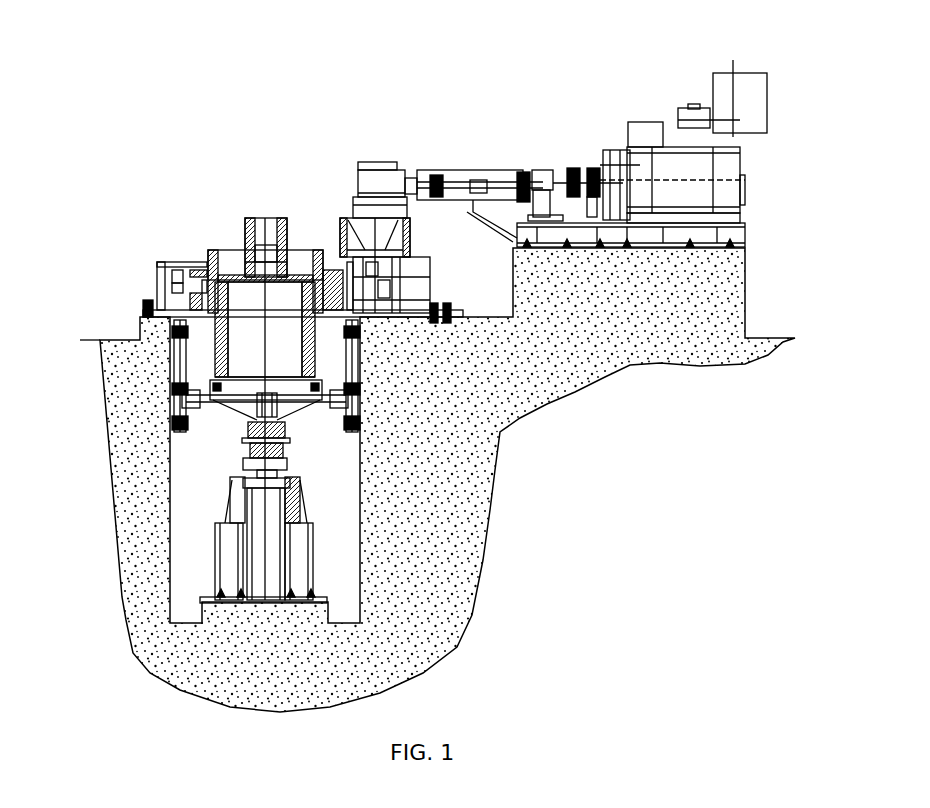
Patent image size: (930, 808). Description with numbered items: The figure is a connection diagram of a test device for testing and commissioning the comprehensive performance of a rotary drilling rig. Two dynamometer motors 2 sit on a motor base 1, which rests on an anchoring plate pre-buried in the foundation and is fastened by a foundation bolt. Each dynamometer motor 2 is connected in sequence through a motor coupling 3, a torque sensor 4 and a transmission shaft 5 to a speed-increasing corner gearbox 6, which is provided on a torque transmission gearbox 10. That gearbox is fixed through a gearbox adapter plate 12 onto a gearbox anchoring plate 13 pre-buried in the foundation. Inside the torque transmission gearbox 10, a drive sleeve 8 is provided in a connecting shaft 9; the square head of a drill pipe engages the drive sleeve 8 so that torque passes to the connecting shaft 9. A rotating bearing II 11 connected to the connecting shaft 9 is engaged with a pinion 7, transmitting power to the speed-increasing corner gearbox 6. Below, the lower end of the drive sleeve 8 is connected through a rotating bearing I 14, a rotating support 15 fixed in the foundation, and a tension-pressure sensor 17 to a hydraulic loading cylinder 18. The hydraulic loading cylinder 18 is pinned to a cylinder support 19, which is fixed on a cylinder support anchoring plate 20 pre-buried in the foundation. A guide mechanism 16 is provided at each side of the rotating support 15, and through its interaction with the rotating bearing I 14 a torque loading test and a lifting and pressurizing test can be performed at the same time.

The motor base 1 is at (740, 213).
The dynamometer motor 2 is at (678, 173).
The motor coupling 3 is at (610, 170).
The torque sensor 4 is at (577, 173).
The transmission shaft 5 is at (463, 180).
The speed-increasing corner gearbox 6 is at (395, 177).
The pinion 7 is at (373, 280).
The drive sleeve 8 is at (242, 253).
The connecting shaft 9 is at (203, 253).
The torque transmission gearbox 10 is at (173, 270).
The rotating bearing II 11 is at (173, 273).
The gearbox adapter plate 12 is at (145, 305).
The gearbox anchoring plate 13 is at (147, 313).
The rotating bearing I 14 is at (210, 387).
The rotating support 15 is at (233, 397).
The guide mechanism 16 is at (248, 430).
The tension-pressure sensor 17 is at (250, 445).
The hydraulic loading cylinder 18 is at (260, 515).
The cylinder support 19 is at (230, 567).
The cylinder support anchoring plate 20 is at (217, 597).